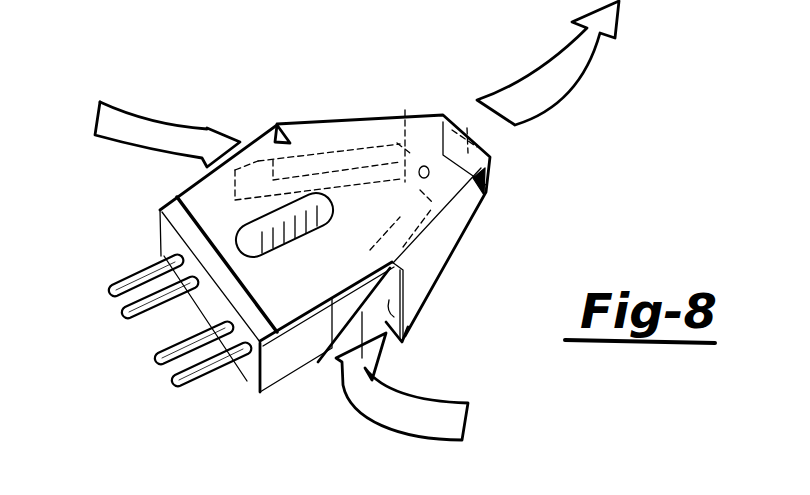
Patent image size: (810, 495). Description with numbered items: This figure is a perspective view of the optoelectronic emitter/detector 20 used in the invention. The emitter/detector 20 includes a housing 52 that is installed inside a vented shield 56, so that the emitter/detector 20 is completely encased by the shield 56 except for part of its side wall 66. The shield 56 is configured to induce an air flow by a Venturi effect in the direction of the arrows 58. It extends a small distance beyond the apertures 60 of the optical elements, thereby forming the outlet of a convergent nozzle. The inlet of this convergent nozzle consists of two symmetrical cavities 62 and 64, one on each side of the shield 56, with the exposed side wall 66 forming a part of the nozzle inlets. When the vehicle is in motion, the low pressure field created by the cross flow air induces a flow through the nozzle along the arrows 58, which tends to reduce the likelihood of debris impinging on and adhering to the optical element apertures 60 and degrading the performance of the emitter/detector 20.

The emitter/detector 20 is at (144, 212).
The housing 52 is at (248, 377).
The vented shield 56 is at (458, 222).
The arrows 58 is at (166, 124).
The apertures 60 is at (425, 145).
The cavity 62 is at (273, 134).
The cavity 64 is at (410, 312).
The side wall 66 is at (322, 348).